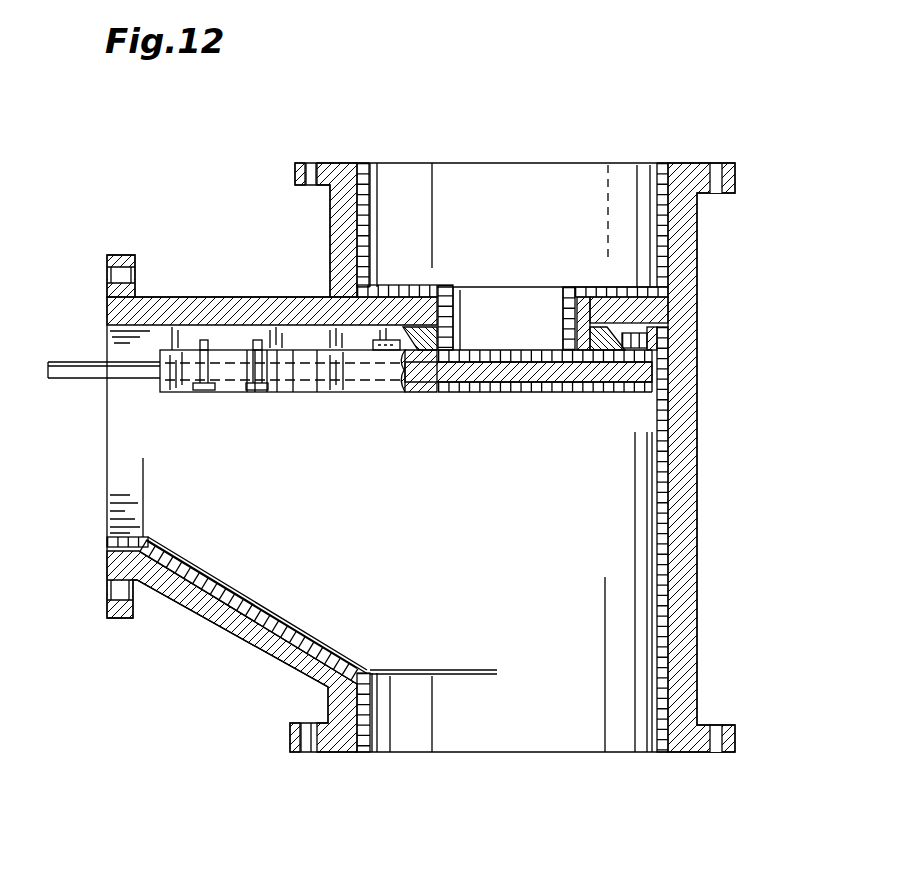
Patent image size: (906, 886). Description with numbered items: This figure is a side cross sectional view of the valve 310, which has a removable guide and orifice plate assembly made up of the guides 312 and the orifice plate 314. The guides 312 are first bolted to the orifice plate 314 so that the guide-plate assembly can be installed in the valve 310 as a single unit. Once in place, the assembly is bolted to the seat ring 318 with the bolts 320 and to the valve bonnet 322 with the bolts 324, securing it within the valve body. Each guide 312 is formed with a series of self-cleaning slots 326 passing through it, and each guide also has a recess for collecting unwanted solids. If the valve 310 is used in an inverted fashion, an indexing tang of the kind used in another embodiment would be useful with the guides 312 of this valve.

The valve 310 is at (421, 457).
The guides 312 is at (175, 395).
The orifice plate 314 is at (657, 327).
The seat ring 318 is at (633, 312).
The bolts 320 is at (398, 325).
The valve bonnet 322 is at (181, 303).
The bolts 324 is at (207, 340).
The self-cleaning slots 326 is at (233, 395).